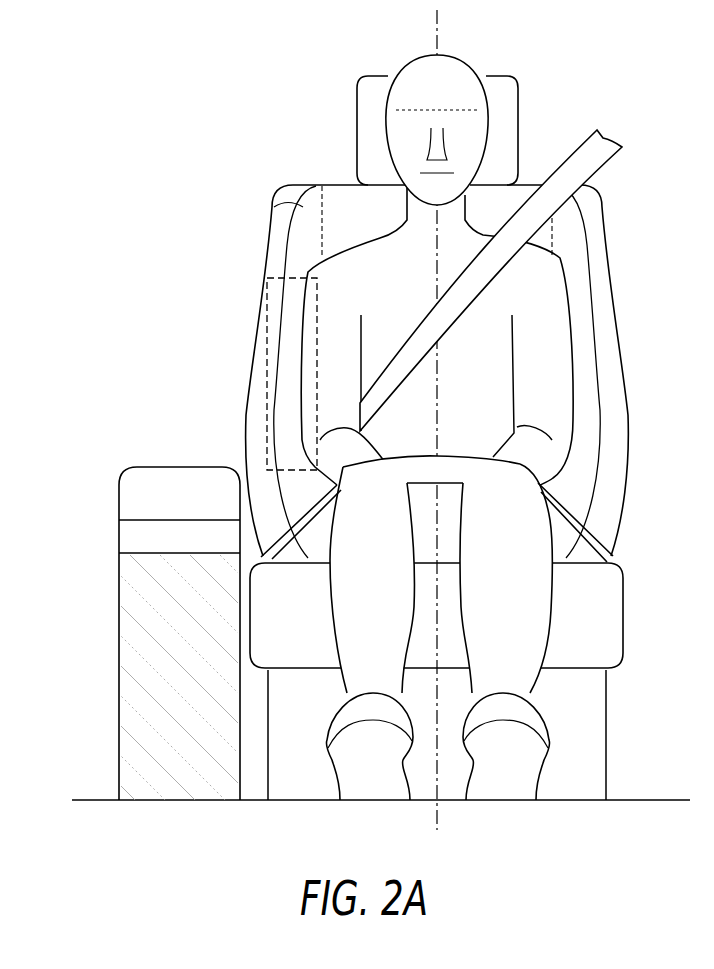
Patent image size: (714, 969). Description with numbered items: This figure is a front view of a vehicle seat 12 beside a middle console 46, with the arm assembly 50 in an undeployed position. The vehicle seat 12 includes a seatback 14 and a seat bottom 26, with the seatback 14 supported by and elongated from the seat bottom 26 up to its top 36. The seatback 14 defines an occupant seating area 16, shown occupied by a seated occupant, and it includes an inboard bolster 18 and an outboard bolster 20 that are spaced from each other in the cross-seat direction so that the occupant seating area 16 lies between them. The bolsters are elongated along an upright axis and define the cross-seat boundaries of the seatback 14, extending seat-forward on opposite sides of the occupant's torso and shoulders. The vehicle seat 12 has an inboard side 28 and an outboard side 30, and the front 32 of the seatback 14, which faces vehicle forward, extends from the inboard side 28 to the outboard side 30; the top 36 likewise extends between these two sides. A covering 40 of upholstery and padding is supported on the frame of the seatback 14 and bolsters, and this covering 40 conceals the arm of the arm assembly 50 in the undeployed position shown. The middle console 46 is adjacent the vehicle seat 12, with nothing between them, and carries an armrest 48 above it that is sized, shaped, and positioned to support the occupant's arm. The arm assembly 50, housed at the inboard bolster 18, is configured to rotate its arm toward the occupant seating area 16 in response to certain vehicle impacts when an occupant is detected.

The vehicle seat 12 is at (616, 237).
The seatback 14 is at (604, 292).
The occupant seating area 16 is at (371, 198).
The inboard bolster 18 is at (258, 443).
The outboard bolster 20 is at (612, 418).
The seat bottom 26 is at (610, 626).
The inboard side 28 is at (247, 392).
The outboard side 30 is at (627, 362).
The front 32 is at (276, 206).
The top 36 is at (527, 185).
The covering 40 is at (262, 253).
The middle console 46 is at (119, 540).
The armrest 48 is at (119, 498).
The arm assembly 50 is at (257, 333).